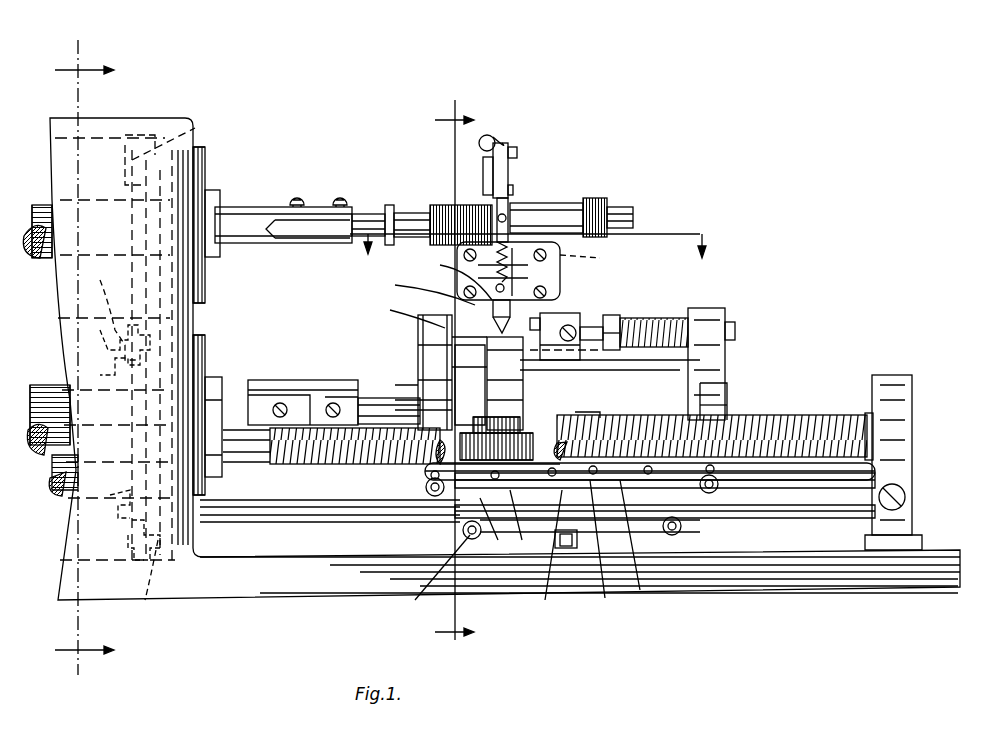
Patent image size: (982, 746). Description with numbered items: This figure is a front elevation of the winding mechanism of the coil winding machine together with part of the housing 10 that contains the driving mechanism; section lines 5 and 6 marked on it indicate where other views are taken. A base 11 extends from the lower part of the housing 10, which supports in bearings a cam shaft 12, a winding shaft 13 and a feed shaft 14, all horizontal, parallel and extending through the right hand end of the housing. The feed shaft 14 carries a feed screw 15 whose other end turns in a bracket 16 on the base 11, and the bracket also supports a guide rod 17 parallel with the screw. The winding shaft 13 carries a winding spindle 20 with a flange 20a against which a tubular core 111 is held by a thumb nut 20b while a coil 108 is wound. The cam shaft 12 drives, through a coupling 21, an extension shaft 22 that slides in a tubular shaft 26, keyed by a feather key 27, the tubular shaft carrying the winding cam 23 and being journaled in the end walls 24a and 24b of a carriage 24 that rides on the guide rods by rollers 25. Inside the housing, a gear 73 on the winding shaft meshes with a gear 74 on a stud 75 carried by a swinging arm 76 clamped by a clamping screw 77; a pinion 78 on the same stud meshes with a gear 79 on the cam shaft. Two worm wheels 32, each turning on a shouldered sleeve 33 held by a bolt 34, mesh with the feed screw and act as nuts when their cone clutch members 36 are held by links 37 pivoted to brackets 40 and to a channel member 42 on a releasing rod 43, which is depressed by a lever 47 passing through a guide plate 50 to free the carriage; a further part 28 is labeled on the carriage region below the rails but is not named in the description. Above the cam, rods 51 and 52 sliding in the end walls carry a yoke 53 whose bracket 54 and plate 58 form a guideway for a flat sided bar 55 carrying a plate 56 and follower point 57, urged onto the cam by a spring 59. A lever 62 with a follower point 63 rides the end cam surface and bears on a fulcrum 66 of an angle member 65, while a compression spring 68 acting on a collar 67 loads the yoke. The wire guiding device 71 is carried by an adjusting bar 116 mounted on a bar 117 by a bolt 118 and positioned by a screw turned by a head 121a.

The section line 5- 5 is at (84, 364).
The section line 6- 6 is at (535, 246).
The coupling 21 is at (285, 382).
The housing 10 is at (160, 122).
The base 11 is at (378, 590).
The cam shaft 12 is at (38, 388).
The winding shaft 13 is at (238, 215).
The feed shaft 14 is at (64, 492).
The feed screw 15 is at (270, 470).
The bracket 16 is at (900, 376).
The guide rod 17 is at (835, 504).
The winding spindle 20 is at (350, 212).
The flange 20a is at (389, 204).
The thumb nut 20b is at (600, 212).
The extension shaft 22 is at (370, 398).
The winding cam 23 is at (455, 352).
The carriage 24 is at (745, 482).
The end wall 24a is at (404, 312).
The end wall 24b is at (715, 318).
The rollers 25 is at (420, 530).
The tubular shaft 26 is at (690, 383).
The feather key 27 is at (412, 398).
The link 28 is at (435, 575).
The worm wheels 32 is at (540, 445).
The shouldered sleeve 33 is at (472, 536).
The bolt 34 is at (510, 440).
The clutch member 36 is at (395, 478).
The links 37 is at (567, 544).
The brackets 40 is at (430, 480).
The channel member 42 is at (578, 538).
The releasing rod 43 is at (526, 522).
The lever 47 is at (551, 553).
The guide plate 50 is at (602, 548).
The rod 51 is at (416, 340).
The rod 52 is at (423, 288).
The yoke 53 is at (580, 322).
The bracket 54 is at (560, 300).
The flat sided bar 55 is at (540, 215).
The plate 56 is at (457, 280).
The follower point 57 is at (492, 312).
The plate 58 is at (626, 268).
The spring 59 is at (460, 250).
The lever 62 is at (540, 365).
The follower point 63 is at (530, 378).
The angle member 65 is at (560, 310).
The fulcrum 66 is at (575, 345).
The collar 67 is at (615, 322).
The compression spring 68 is at (660, 322).
The wire guiding device 71 is at (514, 188).
The gear 73 is at (196, 130).
The gear 74 is at (200, 300).
The stud 75 is at (93, 345).
The arm 76 is at (148, 598).
The clamping screw 77 is at (160, 550).
The pinion 78 is at (114, 311).
The gear 79 is at (110, 498).
The coil 108 is at (448, 206).
The tubular core 111 is at (410, 210).
The adjusting bar 116 is at (485, 190).
The bar 117 is at (508, 168).
The bolt 118 is at (516, 152).
The head 121a is at (492, 137).